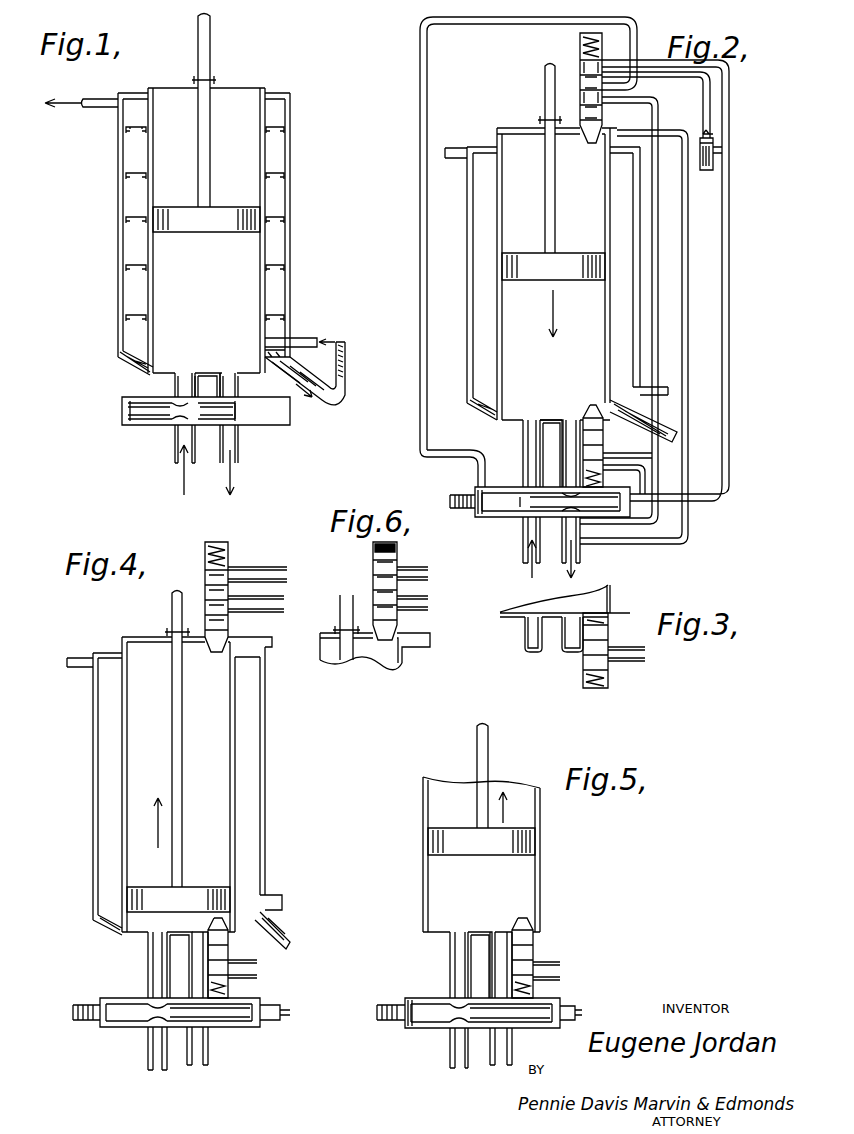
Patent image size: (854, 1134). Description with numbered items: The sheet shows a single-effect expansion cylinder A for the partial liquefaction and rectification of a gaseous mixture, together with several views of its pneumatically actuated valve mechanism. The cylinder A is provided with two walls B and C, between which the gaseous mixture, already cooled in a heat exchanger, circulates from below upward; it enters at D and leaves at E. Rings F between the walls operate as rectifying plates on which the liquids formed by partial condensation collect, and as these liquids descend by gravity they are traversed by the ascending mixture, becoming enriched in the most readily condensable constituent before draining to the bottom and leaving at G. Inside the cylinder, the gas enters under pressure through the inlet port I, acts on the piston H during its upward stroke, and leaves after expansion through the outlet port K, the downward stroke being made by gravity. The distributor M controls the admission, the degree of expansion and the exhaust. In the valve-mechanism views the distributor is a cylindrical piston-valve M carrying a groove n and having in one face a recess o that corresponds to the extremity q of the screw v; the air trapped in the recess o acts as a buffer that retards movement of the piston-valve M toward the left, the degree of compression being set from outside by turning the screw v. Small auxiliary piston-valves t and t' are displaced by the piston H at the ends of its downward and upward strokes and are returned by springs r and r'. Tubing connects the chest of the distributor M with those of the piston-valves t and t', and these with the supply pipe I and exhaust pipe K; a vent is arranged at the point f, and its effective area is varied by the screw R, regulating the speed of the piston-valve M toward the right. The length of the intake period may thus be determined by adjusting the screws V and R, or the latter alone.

In FIG. 1, the expansion cylinder A is at (240, 294).
In FIG. 2, the expansion cylinder A is at (522, 348).
In FIG. 1, the cylinder wall B is at (265, 156).
In FIG. 1, the cylinder wall C is at (290, 207).
In FIG. 1, the mixture inlet D is at (286, 340).
In FIG. 1, the mixture outlet E is at (81, 88).
In FIG. 1, the rings F is at (125, 180).
In FIG. 1, the liquid outlet G is at (300, 370).
In FIG. 1, the piston H is at (241, 208).
In FIG. 2, the piston H is at (553, 254).
In FIG. 4, the piston H is at (194, 888).
In FIG. 5, the piston H is at (462, 832).
In FIG. 1, the inlet port I is at (175, 456).
In FIG. 2, the inlet port I is at (523, 556).
In FIG. 4, the inlet port I is at (148, 1068).
In FIG. 5, the inlet port I is at (458, 1068).
In FIG. 1, the outlet port K is at (238, 452).
In FIG. 2, the outlet port K is at (580, 553).
In FIG. 4, the outlet port K is at (208, 1057).
In FIG. 5, the outlet port K is at (512, 1047).
In FIG. 1, the distributor M is at (211, 426).
In FIG. 2, the distributor M is at (523, 487).
In FIG. 4, the distributor M is at (180, 1028).
In FIG. 5, the distributor M is at (448, 1028).
In FIG. 2, the screw R is at (706, 170).
In FIG. 2, the vent f is at (716, 145).
In FIG. 2, the spring r is at (615, 479).
In FIG. 3, the spring r is at (615, 670).
In FIG. 4, the spring r is at (236, 985).
In FIG. 5, the spring r is at (549, 988).
In FIG. 2, the spring r' is at (600, 88).
In FIG. 6, the spring r' is at (363, 591).
In FIG. 4, the spring r' is at (230, 597).
In FIG. 2, the auxiliary piston-valve t is at (617, 446).
In FIG. 3, the auxiliary piston-valve t is at (578, 650).
In FIG. 4, the auxiliary piston-valve t is at (232, 958).
In FIG. 5, the auxiliary piston-valve t is at (538, 958).
In FIG. 2, the auxiliary piston-valve t' is at (579, 97).
In FIG. 6, the auxiliary piston-valve t' is at (384, 586).
In FIG. 4, the auxiliary piston-valve t' is at (231, 591).
In FIG. 2, the groove n is at (562, 522).
In FIG. 4, the groove n is at (152, 1025).
In FIG. 5, the groove n is at (465, 1028).
In FIG. 2, the recess o is at (518, 517).
In FIG. 2, the screw extremity q is at (485, 518).
In FIG. 5, the screw extremity q is at (410, 1030).
In FIG. 2, the screw v is at (452, 508).
In FIG. 4, the screw V is at (84, 1022).
In FIG. 5, the screw V is at (390, 1005).